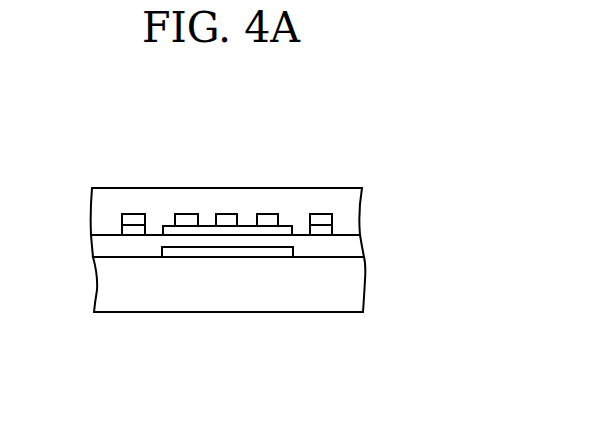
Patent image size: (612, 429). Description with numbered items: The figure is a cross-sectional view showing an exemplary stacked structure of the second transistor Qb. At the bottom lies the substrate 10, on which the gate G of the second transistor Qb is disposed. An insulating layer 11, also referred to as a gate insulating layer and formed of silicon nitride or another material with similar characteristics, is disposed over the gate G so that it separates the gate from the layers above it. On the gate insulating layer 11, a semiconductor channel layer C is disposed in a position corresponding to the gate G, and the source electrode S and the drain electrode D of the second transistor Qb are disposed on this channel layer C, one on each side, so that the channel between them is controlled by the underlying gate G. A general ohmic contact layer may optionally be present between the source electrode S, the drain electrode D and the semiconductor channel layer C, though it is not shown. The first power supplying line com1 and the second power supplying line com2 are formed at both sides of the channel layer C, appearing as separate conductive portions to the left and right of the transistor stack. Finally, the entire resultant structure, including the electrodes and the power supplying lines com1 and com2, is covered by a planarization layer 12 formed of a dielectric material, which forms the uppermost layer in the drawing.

The substrate 10 is at (363, 288).
The gate insulating layer 11 is at (359, 248).
The planarization layer 12 is at (357, 215).
The first power supplying line com1 is at (133, 214).
The second power supplying line com2 is at (325, 214).
The source electrode S is at (183, 214).
The semiconductor channel layer C is at (207, 230).
The drain electrode D is at (228, 214).
The gate G is at (252, 250).
The second transistor Qb is at (268, 137).